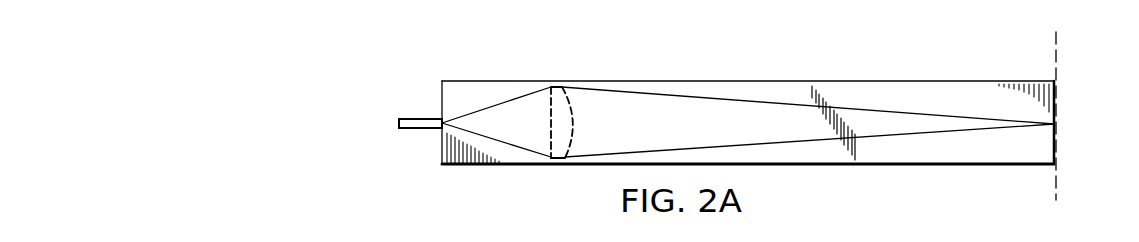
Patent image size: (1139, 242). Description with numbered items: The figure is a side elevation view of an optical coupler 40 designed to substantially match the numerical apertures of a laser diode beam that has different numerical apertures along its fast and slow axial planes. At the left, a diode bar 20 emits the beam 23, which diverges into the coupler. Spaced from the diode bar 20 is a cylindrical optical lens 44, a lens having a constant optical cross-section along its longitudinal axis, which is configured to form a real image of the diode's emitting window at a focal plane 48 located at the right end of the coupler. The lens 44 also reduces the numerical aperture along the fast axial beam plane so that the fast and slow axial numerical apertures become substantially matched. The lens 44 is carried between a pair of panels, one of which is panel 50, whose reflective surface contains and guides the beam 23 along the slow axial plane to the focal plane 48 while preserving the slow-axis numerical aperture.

The diode bar 20 is at (413, 117).
The beam 23 is at (475, 108).
The optical coupler 40 is at (980, 78).
The cylindrical optical lens 44 is at (572, 115).
The focal plane 48 is at (1056, 57).
The panel 50 is at (858, 96).